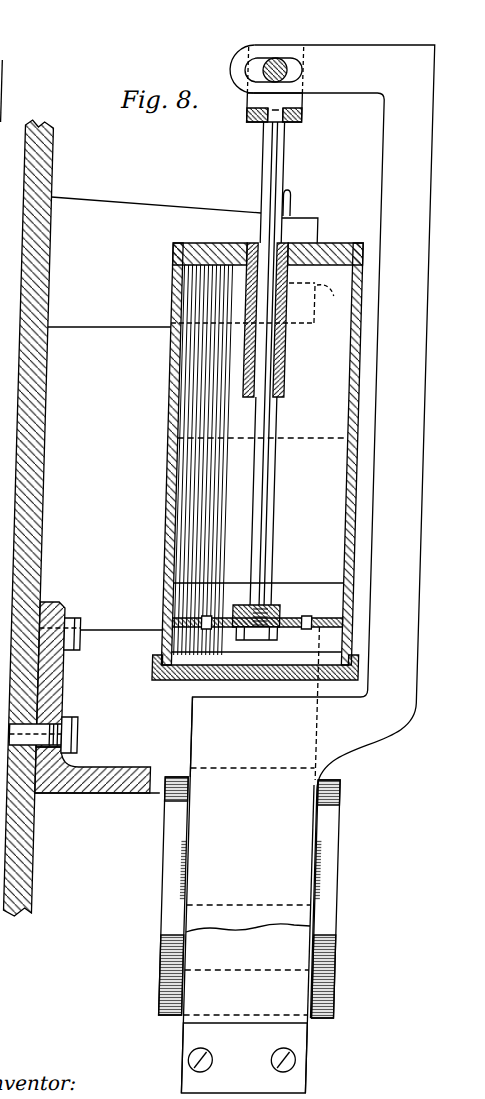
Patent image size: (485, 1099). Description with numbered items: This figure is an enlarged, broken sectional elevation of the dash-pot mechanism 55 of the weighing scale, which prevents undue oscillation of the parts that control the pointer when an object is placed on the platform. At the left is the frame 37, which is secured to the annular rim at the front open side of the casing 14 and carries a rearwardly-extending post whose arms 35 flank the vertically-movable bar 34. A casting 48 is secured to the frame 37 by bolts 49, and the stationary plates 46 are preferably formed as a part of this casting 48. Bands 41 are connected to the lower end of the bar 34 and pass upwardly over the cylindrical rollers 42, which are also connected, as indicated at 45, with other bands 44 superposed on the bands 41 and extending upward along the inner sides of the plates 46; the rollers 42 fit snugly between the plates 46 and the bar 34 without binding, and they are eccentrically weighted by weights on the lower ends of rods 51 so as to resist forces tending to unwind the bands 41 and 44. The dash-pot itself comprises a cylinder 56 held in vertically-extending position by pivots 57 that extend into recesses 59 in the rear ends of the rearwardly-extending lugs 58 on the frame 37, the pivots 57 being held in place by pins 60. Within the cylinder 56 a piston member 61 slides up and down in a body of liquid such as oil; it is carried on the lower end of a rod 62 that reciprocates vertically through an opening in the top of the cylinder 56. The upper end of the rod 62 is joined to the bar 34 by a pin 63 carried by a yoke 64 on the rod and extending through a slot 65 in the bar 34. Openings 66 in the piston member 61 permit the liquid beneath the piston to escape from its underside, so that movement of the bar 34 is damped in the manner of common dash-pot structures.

The casing 14 is at (5, 58).
The vertically-movable bar 34 is at (213, 1092).
The arms 35 is at (244, 1058).
The frame 37 is at (56, 464).
The bands 41 is at (247, 960).
The cylindrical rollers 42 is at (341, 829).
The bands 44 is at (214, 691).
The connection of bands to rollers 45 is at (342, 868).
The stationary plates 46 is at (170, 737).
The casting 48 is at (72, 608).
The bolts 49 is at (102, 725).
The rods 51 is at (361, 940).
The dash-pot mechanism 55 is at (167, 460).
The cylinder 56 is at (180, 506).
The pivots 57 is at (258, 284).
The lugs 58 is at (184, 207).
The recesses 59 is at (331, 298).
The pins 60 is at (297, 201).
The piston member 61 is at (180, 603).
The rod 62 is at (287, 521).
The pin 63 is at (279, 57).
The yoke 64 is at (256, 101).
The slot 65 is at (291, 70).
The openings 66 is at (227, 615).